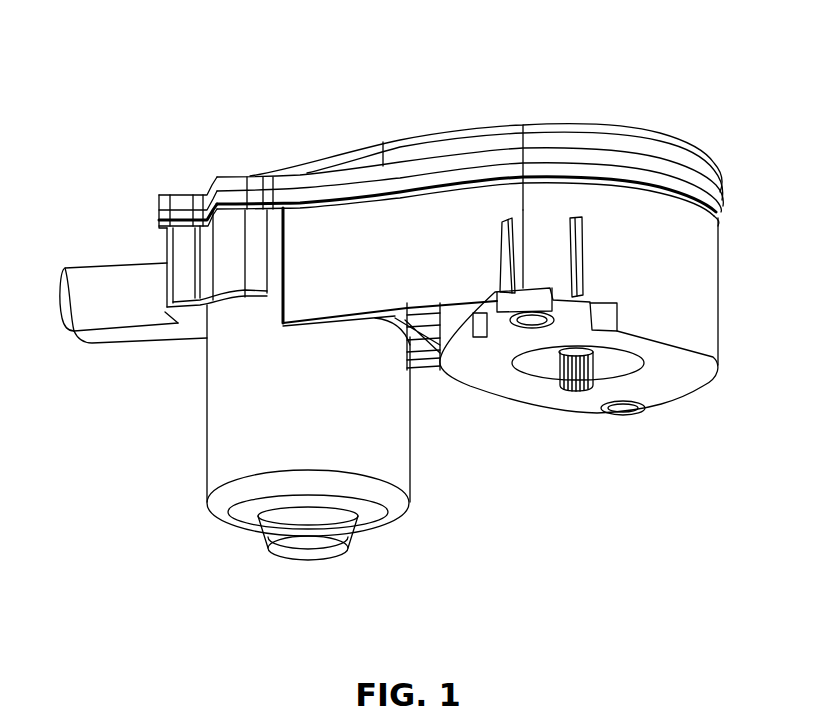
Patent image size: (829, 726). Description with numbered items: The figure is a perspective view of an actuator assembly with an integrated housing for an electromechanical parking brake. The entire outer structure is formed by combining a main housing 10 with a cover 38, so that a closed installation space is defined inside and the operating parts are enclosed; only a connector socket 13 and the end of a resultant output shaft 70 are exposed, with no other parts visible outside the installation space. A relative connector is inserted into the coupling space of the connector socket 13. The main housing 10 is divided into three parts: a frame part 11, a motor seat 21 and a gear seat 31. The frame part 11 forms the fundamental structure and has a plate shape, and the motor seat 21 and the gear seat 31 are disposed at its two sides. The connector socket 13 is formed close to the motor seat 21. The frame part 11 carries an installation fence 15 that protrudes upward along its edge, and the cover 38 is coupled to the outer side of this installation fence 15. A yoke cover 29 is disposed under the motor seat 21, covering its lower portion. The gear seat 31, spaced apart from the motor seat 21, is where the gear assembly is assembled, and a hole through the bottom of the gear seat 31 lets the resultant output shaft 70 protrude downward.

The main housing 10 is at (184, 427).
The frame part 11 is at (425, 275).
The connector socket 13 is at (106, 284).
The installation fence 15 is at (407, 207).
The motor seat 21 is at (221, 475).
The yoke cover 29 is at (265, 543).
The gear seat 31 is at (700, 285).
The cover 38 is at (492, 143).
The resultant output shaft 70 is at (565, 372).